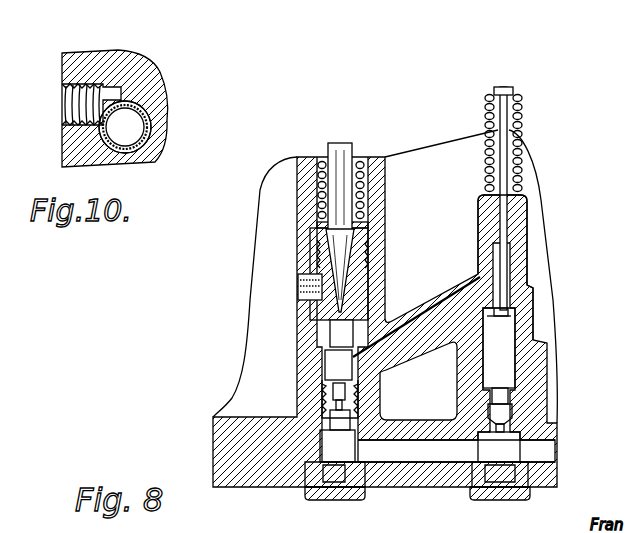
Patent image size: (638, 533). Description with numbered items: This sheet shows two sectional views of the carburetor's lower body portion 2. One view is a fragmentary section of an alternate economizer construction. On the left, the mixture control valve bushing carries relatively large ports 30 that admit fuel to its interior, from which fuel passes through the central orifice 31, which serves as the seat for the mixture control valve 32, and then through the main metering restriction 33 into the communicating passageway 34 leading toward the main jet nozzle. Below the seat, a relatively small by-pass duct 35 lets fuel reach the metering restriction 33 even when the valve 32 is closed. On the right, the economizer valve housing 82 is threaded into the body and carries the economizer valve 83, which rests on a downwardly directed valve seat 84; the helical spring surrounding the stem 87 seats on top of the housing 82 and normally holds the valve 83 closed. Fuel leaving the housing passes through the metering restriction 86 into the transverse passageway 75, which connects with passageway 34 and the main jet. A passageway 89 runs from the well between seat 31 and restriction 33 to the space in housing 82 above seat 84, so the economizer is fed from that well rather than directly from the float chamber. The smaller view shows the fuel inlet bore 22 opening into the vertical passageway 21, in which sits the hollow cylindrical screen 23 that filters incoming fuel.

In FIG. 10, the lower body portion 2 is at (74, 53).
In FIG. 10, the vertical passageway 21 is at (150, 117).
In FIG. 10, the fuel inlet bore 22 is at (62, 110).
In FIG. 10, the hollow cylindrical screen 23 is at (128, 133).
In FIG. 8, the ports 30 is at (323, 285).
In FIG. 8, the central orifice 31 is at (345, 328).
In FIG. 8, the mixture control valve 32 is at (340, 162).
In FIG. 8, the main metering restriction 33 is at (322, 408).
In FIG. 8, the communicating passageway 34 is at (336, 447).
In FIG. 8, the by-pass duct 35 is at (345, 340).
In FIG. 8, the transverse passageway 75 is at (540, 449).
In FIG. 8, the economizer valve housing 82 is at (522, 217).
In FIG. 8, the economizer valve 83 is at (498, 316).
In FIG. 8, the valve seat 84 is at (530, 287).
In FIG. 8, the metering restriction 86 is at (500, 398).
In FIG. 8, the stem 87 is at (510, 138).
In FIG. 8, the passageway 89 is at (416, 308).